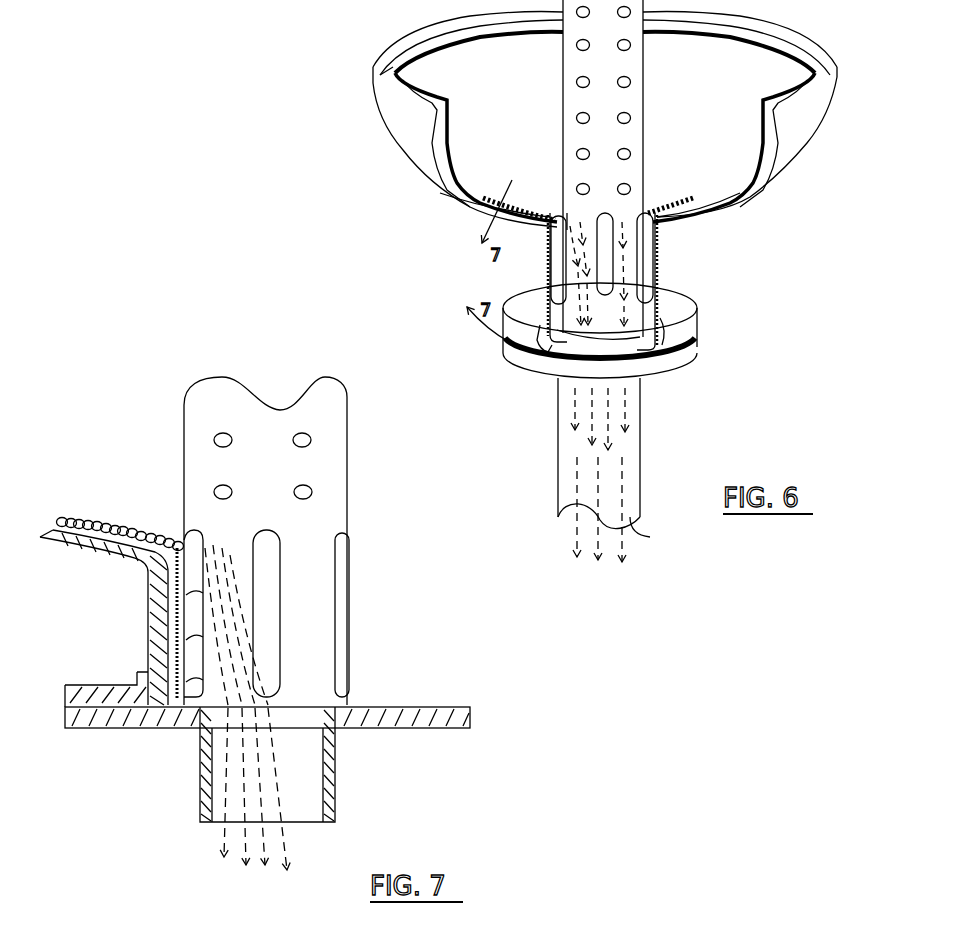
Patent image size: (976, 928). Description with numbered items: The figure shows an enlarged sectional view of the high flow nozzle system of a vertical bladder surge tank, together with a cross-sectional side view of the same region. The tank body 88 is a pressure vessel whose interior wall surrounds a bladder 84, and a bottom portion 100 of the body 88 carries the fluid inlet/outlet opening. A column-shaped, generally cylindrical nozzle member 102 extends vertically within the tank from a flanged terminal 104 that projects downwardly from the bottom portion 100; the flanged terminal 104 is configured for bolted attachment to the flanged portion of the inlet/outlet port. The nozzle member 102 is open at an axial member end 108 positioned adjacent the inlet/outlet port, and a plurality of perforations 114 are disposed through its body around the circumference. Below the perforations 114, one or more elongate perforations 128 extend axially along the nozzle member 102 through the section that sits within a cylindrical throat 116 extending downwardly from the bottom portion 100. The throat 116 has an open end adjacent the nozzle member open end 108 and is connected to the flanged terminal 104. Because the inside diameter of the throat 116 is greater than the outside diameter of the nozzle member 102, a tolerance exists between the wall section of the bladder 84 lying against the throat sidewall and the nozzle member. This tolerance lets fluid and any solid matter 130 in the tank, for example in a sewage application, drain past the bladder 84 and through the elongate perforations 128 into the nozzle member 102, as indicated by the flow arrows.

In FIG. 7, the bladder 84 is at (143, 555).
In FIG. 6, the body 88 is at (808, 127).
In FIG. 7, the bottom portion 100 is at (112, 562).
In FIG. 6, the nozzle member 102 is at (643, 128).
In FIG. 7, the nozzle member 102 is at (340, 437).
In FIG. 6, the flanged terminal 104 is at (683, 300).
In FIG. 7, the flanged terminal 104 is at (95, 687).
In FIG. 7, the axial member end 108 is at (293, 707).
In FIG. 6, the perforations 114 is at (628, 188).
In FIG. 7, the perforations 114 is at (310, 492).
In FIG. 6, the cylindrical throat 116 is at (655, 262).
In FIG. 7, the cylindrical throat 116 is at (157, 631).
In FIG. 6, the elongate perforations 128 is at (597, 213).
In FIG. 7, the elongate perforations 128 is at (268, 582).
In FIG. 6, the solid matter 130 is at (500, 212).
In FIG. 7, the solid matter 130 is at (110, 519).